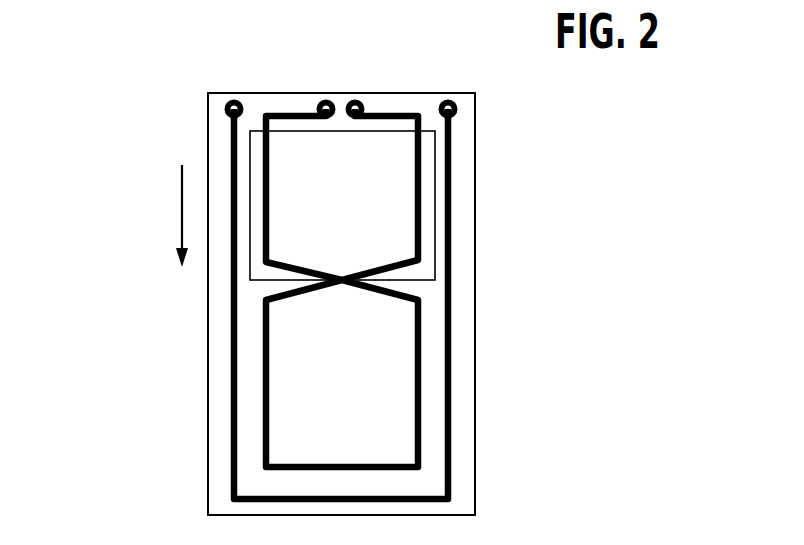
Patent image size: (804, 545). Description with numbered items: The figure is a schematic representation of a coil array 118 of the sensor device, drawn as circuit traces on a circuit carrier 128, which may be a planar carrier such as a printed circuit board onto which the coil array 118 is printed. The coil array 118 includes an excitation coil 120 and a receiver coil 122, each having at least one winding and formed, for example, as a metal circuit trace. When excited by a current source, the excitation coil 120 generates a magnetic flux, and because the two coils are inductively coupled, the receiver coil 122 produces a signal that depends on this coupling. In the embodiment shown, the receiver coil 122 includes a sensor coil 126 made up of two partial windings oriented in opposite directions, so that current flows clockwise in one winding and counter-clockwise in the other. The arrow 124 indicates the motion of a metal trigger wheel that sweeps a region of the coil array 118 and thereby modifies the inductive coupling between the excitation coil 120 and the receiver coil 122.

The coil array 118 is at (183, 85).
The excitation coil 120 is at (448, 204).
The receiver coil 122 is at (255, 285).
The sensor coil 126 is at (267, 398).
The arrow 124 is at (180, 210).
The circuit carrier 128 is at (476, 415).